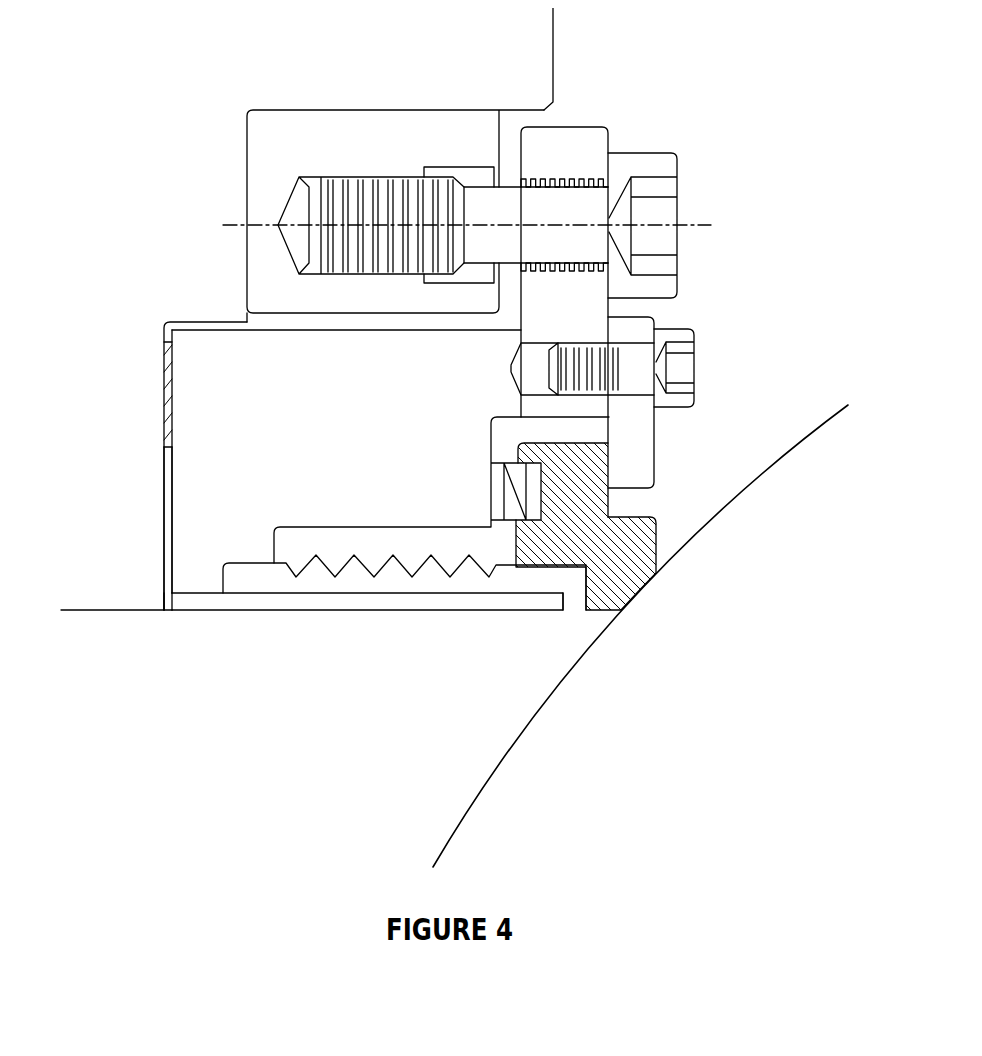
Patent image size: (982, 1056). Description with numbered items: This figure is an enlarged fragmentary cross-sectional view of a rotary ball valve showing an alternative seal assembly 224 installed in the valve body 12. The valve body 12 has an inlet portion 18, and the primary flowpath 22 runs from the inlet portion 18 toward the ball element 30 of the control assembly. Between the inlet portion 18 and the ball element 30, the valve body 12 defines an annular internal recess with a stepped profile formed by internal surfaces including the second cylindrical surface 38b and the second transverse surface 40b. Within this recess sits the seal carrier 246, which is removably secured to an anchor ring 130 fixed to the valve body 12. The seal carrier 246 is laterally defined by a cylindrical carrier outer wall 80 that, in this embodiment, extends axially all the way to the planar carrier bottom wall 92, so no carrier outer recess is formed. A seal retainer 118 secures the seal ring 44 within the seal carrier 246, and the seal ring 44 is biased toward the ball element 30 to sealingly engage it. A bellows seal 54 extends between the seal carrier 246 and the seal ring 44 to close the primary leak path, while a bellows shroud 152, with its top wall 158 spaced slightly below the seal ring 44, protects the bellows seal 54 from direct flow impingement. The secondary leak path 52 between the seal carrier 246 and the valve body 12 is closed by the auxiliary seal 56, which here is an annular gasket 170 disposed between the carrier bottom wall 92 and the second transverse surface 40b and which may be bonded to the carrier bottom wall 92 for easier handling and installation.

The valve body 12 is at (136, 205).
The anchor ring 130 is at (362, 155).
The carrier outer wall 80 is at (347, 328).
The seal assembly 224 is at (731, 152).
The seal retainer 118 is at (636, 435).
The seal carrier 246 is at (340, 434).
The seal ring 44 is at (628, 576).
The bellows seal 54 is at (408, 580).
The second cylindrical surface 38b is at (217, 318).
The auxiliary seal 56 is at (150, 375).
The annular gasket 170 is at (163, 423).
The carrier bottom wall 92 is at (165, 493).
The second transverse surface 40b is at (163, 576).
The secondary leak path 52 is at (168, 613).
The bellows shroud 152 is at (328, 605).
The top wall 158 is at (556, 601).
The inlet portion 18 is at (65, 686).
The primary flowpath 22 is at (175, 762).
The ball element 30 is at (488, 776).